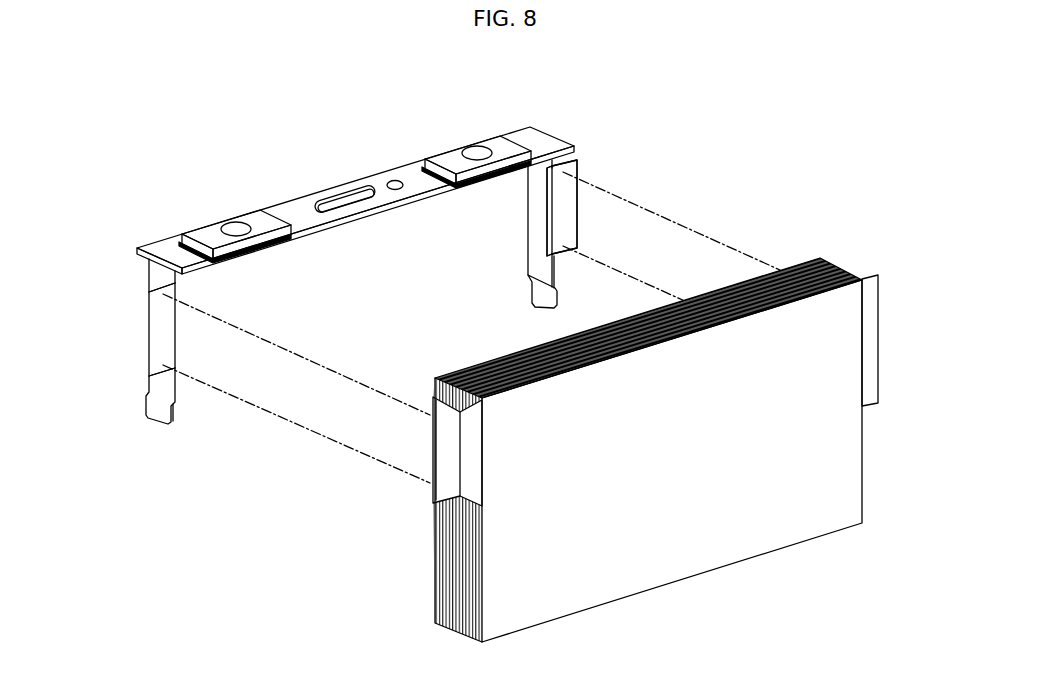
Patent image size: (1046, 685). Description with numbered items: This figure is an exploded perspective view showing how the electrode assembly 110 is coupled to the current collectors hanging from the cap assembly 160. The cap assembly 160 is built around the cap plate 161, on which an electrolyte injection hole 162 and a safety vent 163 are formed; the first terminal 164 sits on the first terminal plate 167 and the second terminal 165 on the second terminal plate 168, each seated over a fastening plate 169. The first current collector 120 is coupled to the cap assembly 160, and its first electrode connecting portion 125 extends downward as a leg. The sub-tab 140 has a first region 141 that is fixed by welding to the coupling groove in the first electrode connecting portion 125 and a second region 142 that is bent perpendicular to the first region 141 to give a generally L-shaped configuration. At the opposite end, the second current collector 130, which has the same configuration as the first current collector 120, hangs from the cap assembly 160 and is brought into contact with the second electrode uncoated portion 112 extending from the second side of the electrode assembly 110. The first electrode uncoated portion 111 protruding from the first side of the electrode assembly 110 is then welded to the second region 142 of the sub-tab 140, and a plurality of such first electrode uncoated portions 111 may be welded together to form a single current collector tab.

The electrode assembly 110 is at (653, 450).
The first electrode uncoated portion 111 is at (873, 355).
The second electrode uncoated portion 112 is at (442, 490).
The first current collector 120 is at (555, 223).
The first electrode connecting portion 125 is at (537, 236).
The second current collector 130 is at (139, 272).
The sub-tab 140 is at (157, 345).
The first region 141 is at (553, 183).
The second region 142 is at (567, 217).
The cap assembly 160 is at (348, 175).
The cap plate 161 is at (297, 205).
The electrolyte injection hole 162 is at (387, 182).
The safety vent 163 is at (330, 200).
The first terminal 164 is at (470, 150).
The second terminal 165 is at (233, 223).
The first terminal plate 167 is at (513, 130).
The second terminal plate 168 is at (198, 228).
The fastening plate 169 is at (177, 241).